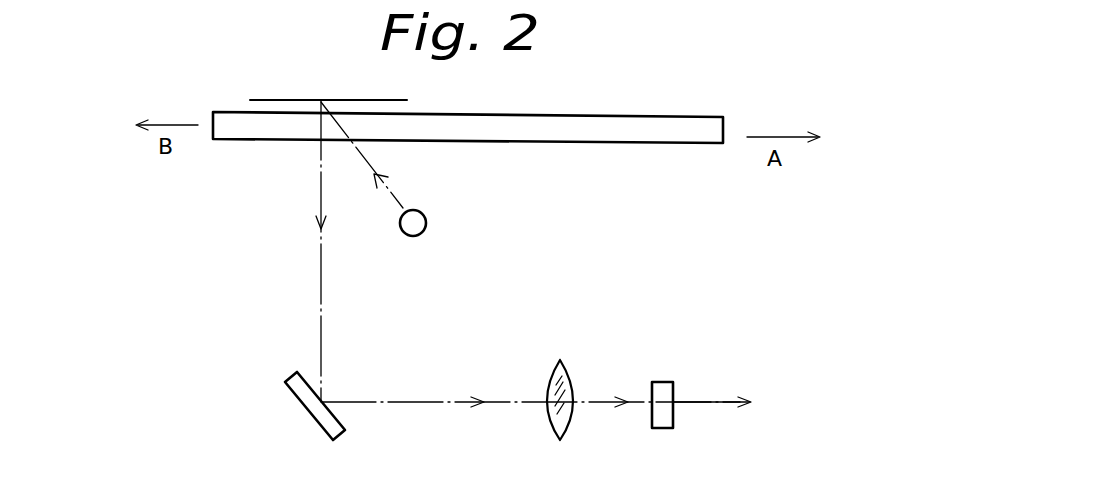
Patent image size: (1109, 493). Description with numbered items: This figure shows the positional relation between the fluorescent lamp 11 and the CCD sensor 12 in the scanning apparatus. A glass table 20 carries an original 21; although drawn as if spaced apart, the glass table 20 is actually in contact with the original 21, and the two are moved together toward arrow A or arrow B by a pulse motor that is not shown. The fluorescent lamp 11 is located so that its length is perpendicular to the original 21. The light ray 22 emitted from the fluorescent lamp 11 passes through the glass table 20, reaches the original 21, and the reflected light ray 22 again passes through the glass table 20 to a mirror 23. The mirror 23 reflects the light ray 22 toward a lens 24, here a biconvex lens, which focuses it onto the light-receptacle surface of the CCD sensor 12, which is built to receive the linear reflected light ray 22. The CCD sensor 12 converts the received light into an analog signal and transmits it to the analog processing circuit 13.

The fluorescent lamp 11 is at (426, 223).
The CCD sensor 12 is at (666, 388).
The analog processing circuit 13 is at (779, 414).
The glass table 20 is at (644, 116).
The original 21 is at (412, 88).
The light ray 22 is at (396, 194).
The mirror 23 is at (320, 425).
The lens 24 is at (575, 378).